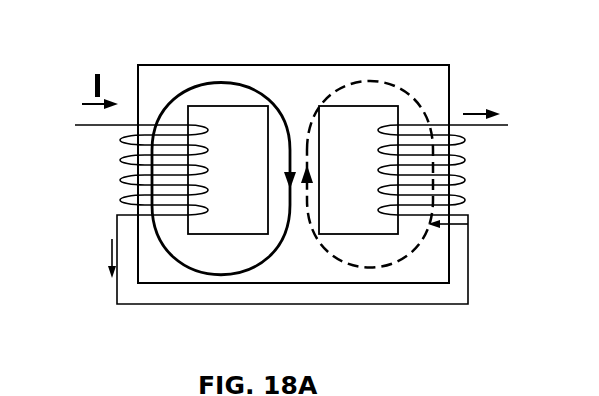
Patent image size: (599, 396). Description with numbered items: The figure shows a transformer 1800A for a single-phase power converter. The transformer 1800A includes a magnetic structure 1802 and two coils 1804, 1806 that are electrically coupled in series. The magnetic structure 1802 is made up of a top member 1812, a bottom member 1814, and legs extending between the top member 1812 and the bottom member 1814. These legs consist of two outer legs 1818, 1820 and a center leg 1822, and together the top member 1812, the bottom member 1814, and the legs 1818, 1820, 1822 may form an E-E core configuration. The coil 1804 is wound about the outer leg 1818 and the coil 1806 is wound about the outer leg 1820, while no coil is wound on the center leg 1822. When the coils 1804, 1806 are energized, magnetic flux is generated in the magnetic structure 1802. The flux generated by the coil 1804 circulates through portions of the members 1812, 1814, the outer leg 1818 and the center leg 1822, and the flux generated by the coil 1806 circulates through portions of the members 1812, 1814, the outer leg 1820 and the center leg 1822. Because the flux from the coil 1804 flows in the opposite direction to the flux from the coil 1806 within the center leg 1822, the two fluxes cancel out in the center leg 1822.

The transformer 1800A is at (152, 37).
The magnetic structure 1802 is at (470, 90).
The coil 1804 is at (207, 153).
The outer leg 1818 is at (142, 128).
The coil 1806 is at (447, 133).
The outer leg 1820 is at (445, 211).
The top member 1812 is at (290, 85).
The bottom member 1814 is at (255, 274).
The center leg 1822 is at (303, 216).